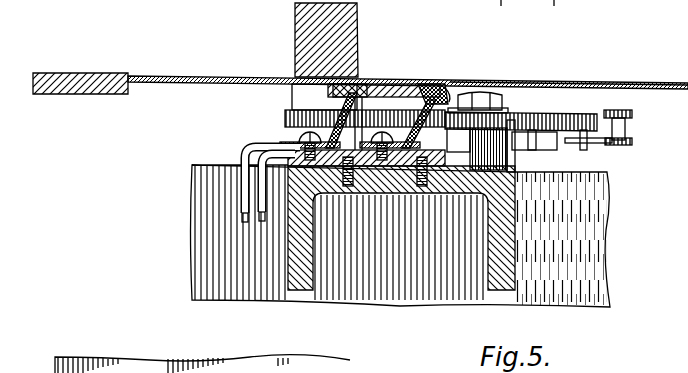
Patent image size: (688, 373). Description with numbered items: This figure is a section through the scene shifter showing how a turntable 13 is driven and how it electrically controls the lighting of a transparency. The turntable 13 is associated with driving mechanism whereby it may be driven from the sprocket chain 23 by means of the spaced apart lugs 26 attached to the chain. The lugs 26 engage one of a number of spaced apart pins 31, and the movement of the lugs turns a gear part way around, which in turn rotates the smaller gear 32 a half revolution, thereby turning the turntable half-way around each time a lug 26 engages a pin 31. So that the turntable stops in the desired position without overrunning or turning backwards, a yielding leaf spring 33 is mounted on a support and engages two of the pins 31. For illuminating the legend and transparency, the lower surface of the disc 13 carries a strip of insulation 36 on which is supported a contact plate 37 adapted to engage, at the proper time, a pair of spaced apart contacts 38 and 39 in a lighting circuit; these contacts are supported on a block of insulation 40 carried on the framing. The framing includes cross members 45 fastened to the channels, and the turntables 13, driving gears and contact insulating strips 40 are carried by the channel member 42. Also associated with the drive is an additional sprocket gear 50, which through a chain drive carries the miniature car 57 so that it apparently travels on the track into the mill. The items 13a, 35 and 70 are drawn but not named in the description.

The turntable 13 is at (218, 77).
The lever arm 13a is at (490, 82).
The sprocket chain 23 is at (628, 106).
The lug 26 is at (604, 146).
The pin 31 is at (531, 150).
The smaller gear 32 is at (285, 118).
The leaf spring 33 is at (556, 149).
The block 35 is at (345, 31).
The strip of insulation 36 is at (402, 84).
The contact plate 37 is at (380, 84).
The contact 38 is at (446, 95).
The contact 39 is at (345, 100).
The block of insulation 40 is at (481, 132).
The channel member 42 is at (492, 250).
The cross member 45 is at (598, 258).
The sprocket gear 50 is at (572, 113).
The miniature car 57 is at (333, 368).
The screw 70 is at (430, 157).